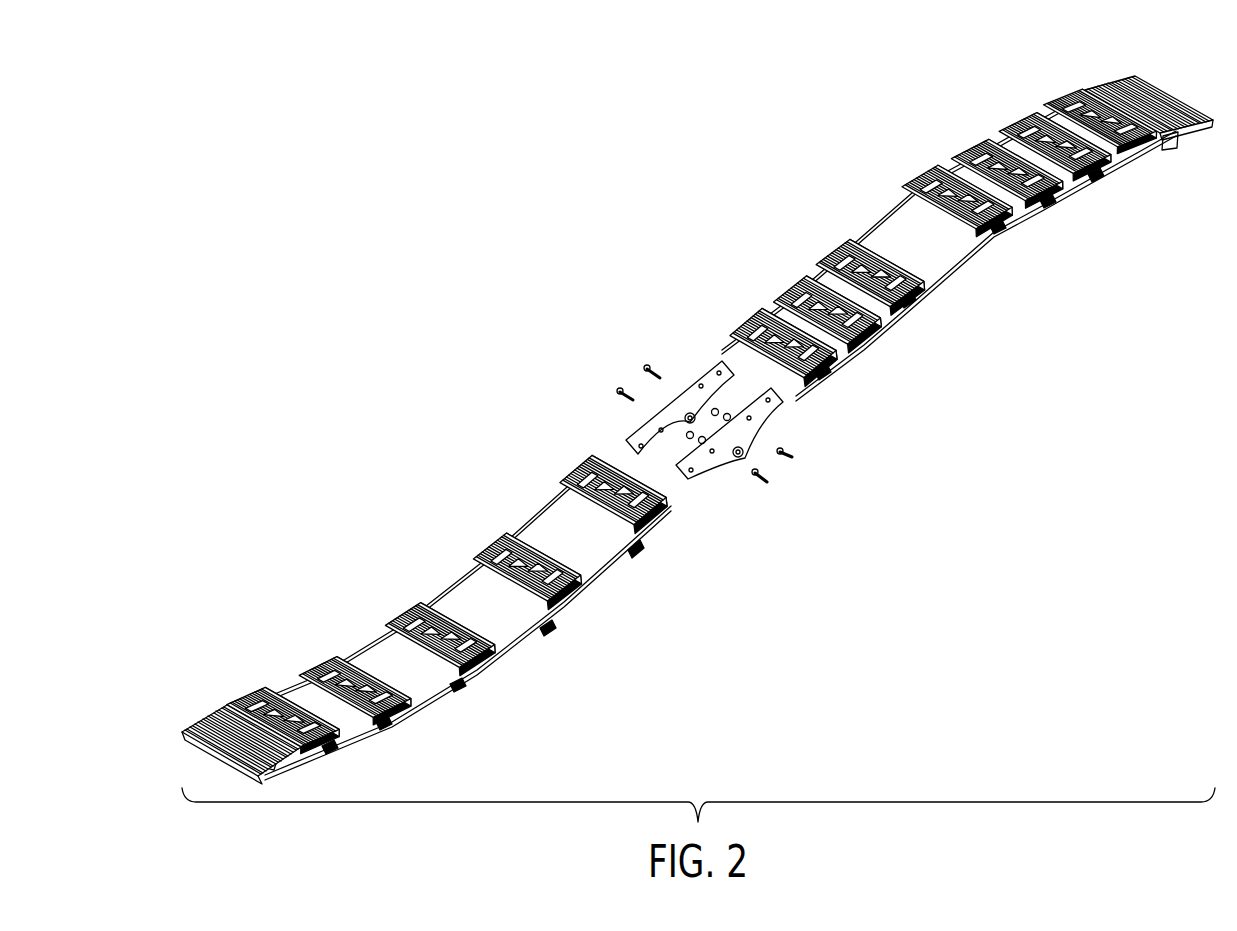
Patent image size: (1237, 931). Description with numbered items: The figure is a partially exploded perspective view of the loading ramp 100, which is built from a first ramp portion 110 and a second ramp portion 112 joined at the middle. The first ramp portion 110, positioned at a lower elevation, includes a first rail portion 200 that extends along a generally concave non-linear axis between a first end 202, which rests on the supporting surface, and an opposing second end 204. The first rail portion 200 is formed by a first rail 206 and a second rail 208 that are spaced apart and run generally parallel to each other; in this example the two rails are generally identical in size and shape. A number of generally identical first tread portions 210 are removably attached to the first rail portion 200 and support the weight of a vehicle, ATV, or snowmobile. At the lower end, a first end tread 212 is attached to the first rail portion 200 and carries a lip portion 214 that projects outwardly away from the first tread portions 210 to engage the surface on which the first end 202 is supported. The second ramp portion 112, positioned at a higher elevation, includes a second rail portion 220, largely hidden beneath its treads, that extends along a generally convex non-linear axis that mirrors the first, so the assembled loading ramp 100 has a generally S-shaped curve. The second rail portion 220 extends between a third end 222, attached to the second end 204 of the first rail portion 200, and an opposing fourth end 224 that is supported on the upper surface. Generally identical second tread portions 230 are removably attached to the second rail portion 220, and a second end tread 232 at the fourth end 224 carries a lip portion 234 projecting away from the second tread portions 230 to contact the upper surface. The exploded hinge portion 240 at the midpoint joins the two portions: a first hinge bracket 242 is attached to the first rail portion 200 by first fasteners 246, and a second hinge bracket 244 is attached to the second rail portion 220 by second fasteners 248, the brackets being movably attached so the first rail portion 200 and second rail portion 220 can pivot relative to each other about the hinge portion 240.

The loading ramp 100 is at (582, 172).
The first ramp portion 110 is at (366, 410).
The second ramp portion 112 is at (968, 105).
The first rail portion 200 is at (415, 705).
The first end 202 is at (228, 690).
The second end 204 is at (582, 440).
The first rail 206 is at (437, 587).
The second rail 208 is at (455, 690).
The first tread portion 210 is at (522, 537).
The first end tread 212 is at (200, 717).
The lip portion 214 is at (272, 764).
The second rail portion 220 is at (840, 345).
The third end 222 is at (722, 313).
The fourth end 224 is at (1100, 73).
The second tread portion 230 is at (776, 290).
The second end tread 232 is at (1163, 88).
The lip portion 234 is at (1160, 133).
The hinge portion 240 is at (692, 365).
The first hinge bracket 242 is at (703, 478).
The second hinge bracket 244 is at (770, 418).
The first fasteners 246 is at (622, 393).
The second fasteners 248 is at (648, 370).